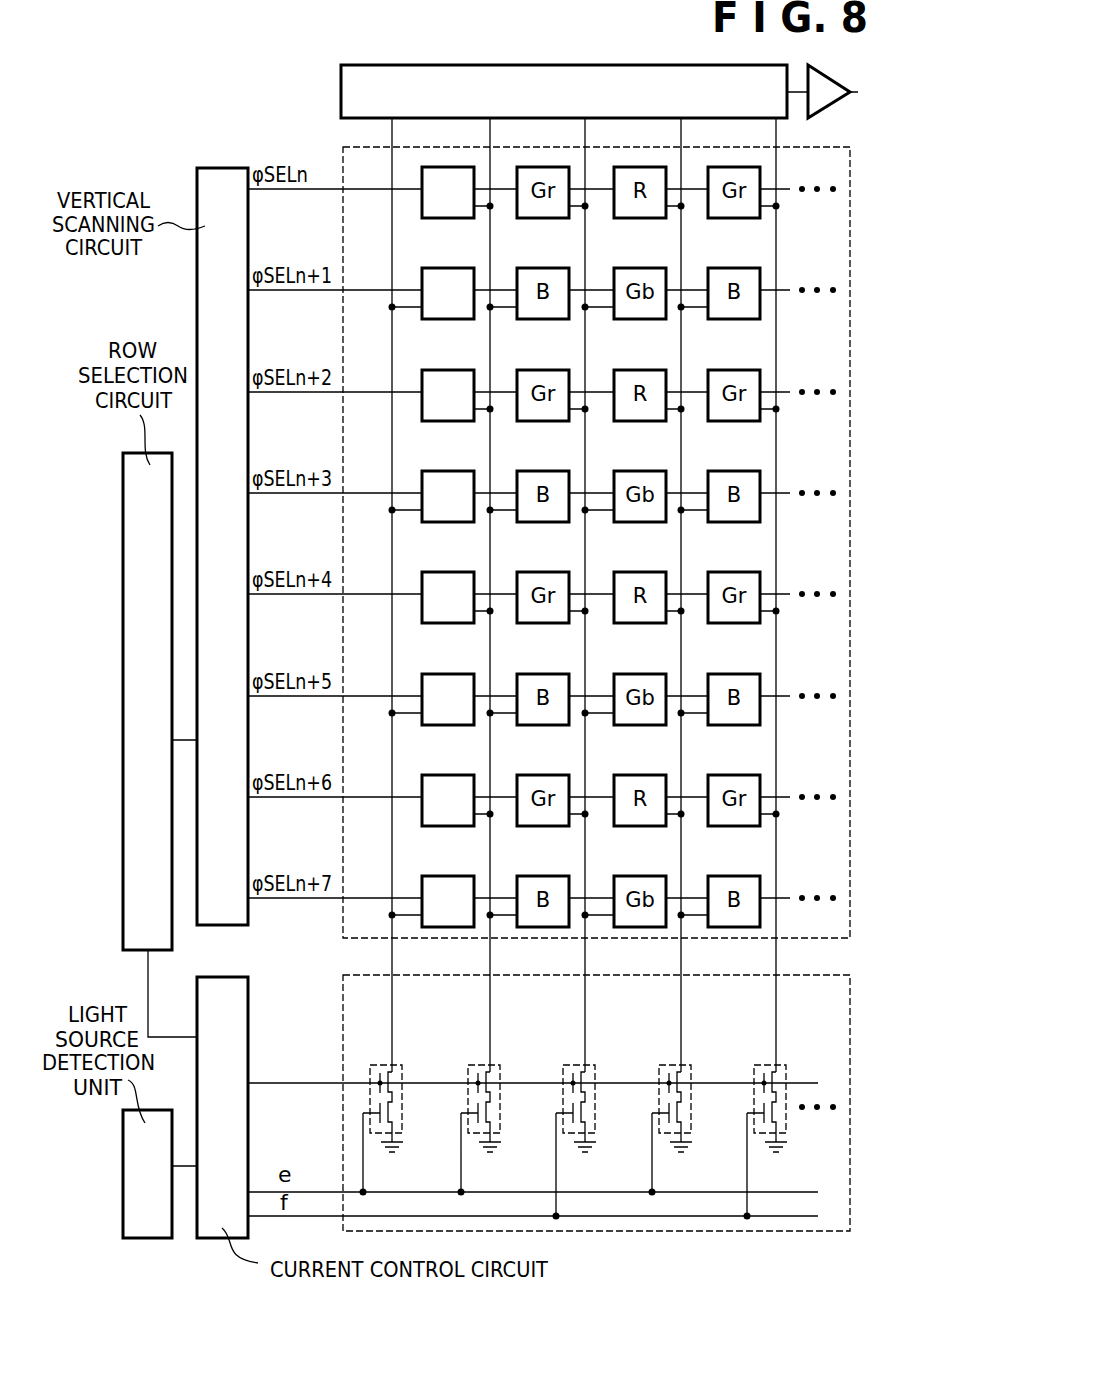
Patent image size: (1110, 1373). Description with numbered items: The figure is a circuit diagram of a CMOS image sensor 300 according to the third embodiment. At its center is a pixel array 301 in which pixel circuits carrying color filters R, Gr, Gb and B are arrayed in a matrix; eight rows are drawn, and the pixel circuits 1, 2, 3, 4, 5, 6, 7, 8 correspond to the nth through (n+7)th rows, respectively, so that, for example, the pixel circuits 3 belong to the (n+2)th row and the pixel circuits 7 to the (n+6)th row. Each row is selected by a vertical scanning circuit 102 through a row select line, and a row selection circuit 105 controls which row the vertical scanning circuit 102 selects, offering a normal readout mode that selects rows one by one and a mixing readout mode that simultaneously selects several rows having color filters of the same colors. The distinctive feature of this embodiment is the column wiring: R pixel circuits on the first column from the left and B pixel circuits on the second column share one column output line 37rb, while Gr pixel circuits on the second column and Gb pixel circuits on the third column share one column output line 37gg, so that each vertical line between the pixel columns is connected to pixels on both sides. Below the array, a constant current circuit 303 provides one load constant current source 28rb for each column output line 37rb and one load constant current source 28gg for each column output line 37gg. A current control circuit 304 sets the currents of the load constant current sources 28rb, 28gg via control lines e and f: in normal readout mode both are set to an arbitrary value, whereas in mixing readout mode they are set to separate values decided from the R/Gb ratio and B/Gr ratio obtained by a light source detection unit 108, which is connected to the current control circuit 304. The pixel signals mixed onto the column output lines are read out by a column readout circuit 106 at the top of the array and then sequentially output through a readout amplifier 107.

The CMOS image sensor 300 is at (198, 74).
The column readout circuit 106 is at (341, 90).
The readout amplifier 107 is at (831, 106).
The pixel array 301 is at (343, 157).
The vertical scanning circuit 102 is at (222, 546).
The row selection circuit 105 is at (147, 701).
The pixel circuits 1 is at (447, 218).
The pixel circuits 2 is at (447, 319).
The pixel circuits 3 is at (447, 421).
The pixel circuits 4 is at (447, 522).
The pixel circuits 5 is at (447, 623).
The pixel circuits 6 is at (447, 725).
The pixel circuits 7 is at (466, 826).
The pixel circuits 8 is at (430, 876).
The column output line 37rb is at (490, 952).
The column output line 37gg is at (585, 952).
The load constant current source 28rb is at (500, 1066).
The load constant current source 28gg is at (598, 1067).
The constant current circuit 303 is at (343, 1117).
The current control circuit 304 is at (222, 1107).
The light source detection unit 108 is at (147, 1174).